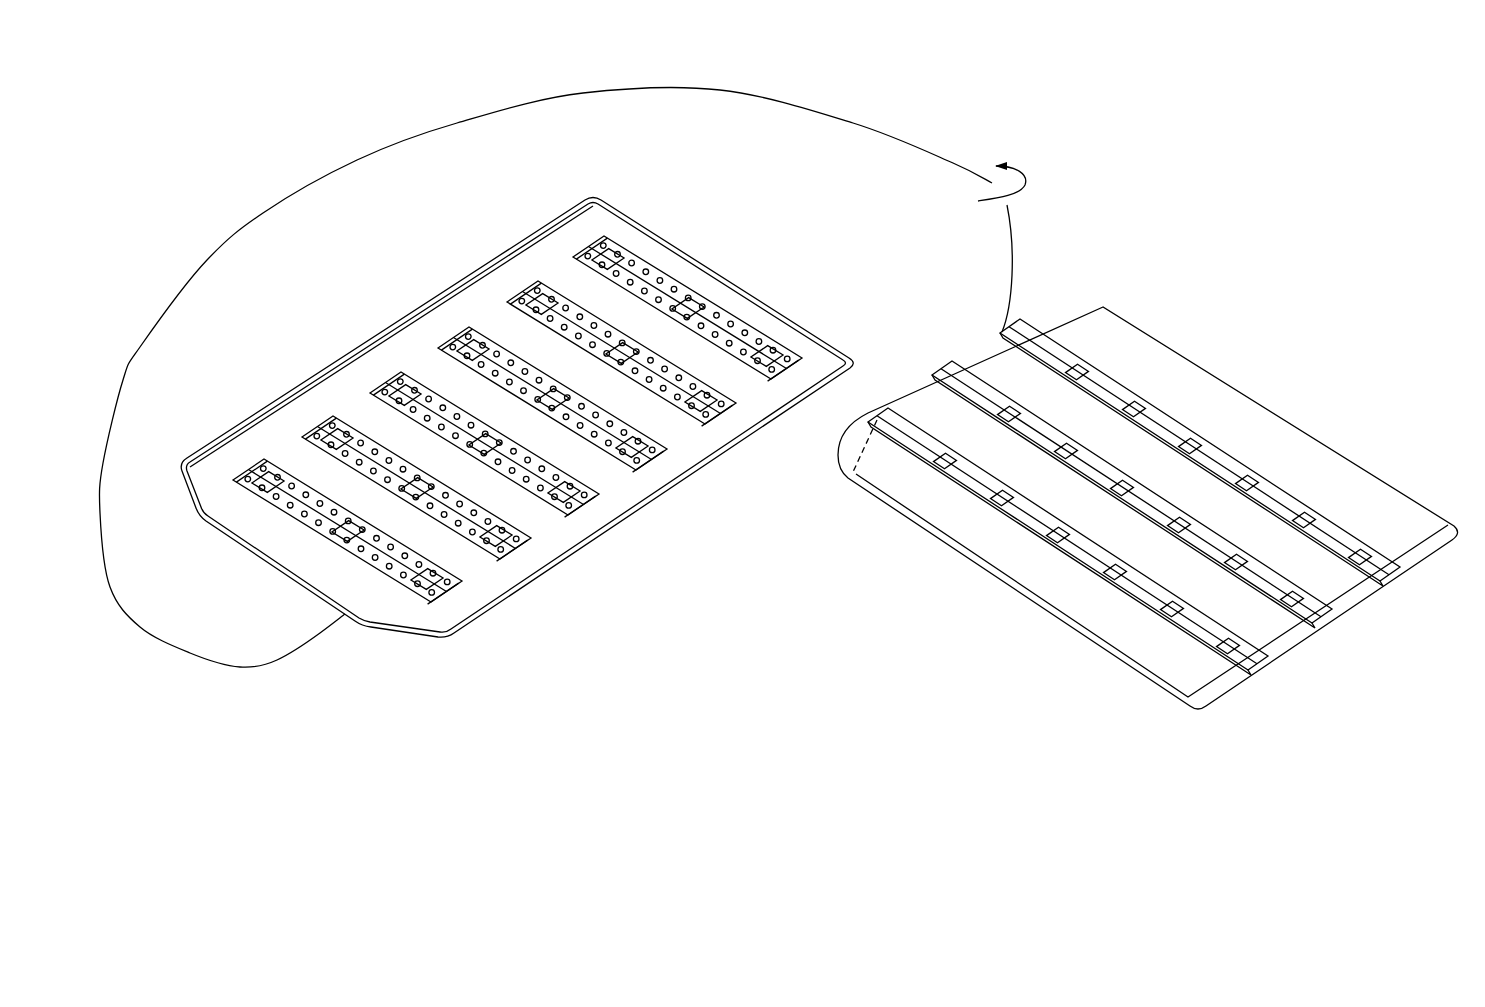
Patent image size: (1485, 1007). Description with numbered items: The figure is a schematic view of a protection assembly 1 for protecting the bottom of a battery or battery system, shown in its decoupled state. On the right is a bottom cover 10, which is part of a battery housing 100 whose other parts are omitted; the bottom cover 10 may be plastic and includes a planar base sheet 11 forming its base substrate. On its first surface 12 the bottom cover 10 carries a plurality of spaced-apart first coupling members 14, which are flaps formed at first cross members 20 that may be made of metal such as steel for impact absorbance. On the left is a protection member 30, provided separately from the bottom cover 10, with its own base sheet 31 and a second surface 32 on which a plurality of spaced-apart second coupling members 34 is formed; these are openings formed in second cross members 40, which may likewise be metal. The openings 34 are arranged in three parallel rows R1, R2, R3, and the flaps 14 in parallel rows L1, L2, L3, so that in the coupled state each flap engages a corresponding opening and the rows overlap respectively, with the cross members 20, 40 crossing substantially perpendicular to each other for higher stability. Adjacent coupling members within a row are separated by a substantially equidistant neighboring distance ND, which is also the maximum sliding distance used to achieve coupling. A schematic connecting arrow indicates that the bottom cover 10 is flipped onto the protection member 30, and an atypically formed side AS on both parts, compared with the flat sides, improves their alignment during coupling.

The battery housing 100 is at (1090, 118).
The protection assembly 1 is at (750, 220).
The bottom cover 10 is at (1155, 517).
The base sheet 11 is at (1060, 590).
The first surface 12 is at (957, 530).
The first coupling members 14 is at (1247, 478).
The first cross members 20 is at (1138, 516).
The protection member 30 is at (505, 405).
The base sheet 31 is at (278, 437).
The second surface 32 is at (520, 405).
The second coupling members 34 is at (608, 250).
The second cross members 40 is at (566, 498).
The atypically formed side AS is at (212, 540).
The neighboring distance ND is at (664, 467).
The row R1 is at (231, 503).
The row R2 is at (299, 556).
The row R3 is at (389, 602).
The row L1 is at (1272, 674).
The row L2 is at (1342, 631).
The row L3 is at (1412, 587).